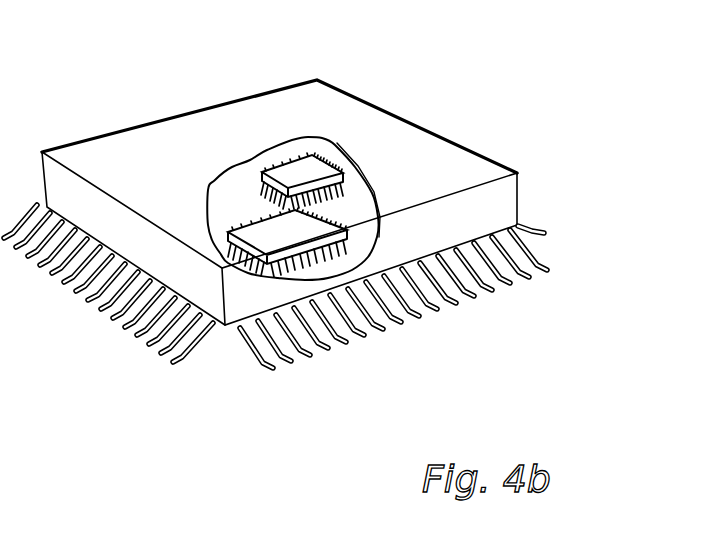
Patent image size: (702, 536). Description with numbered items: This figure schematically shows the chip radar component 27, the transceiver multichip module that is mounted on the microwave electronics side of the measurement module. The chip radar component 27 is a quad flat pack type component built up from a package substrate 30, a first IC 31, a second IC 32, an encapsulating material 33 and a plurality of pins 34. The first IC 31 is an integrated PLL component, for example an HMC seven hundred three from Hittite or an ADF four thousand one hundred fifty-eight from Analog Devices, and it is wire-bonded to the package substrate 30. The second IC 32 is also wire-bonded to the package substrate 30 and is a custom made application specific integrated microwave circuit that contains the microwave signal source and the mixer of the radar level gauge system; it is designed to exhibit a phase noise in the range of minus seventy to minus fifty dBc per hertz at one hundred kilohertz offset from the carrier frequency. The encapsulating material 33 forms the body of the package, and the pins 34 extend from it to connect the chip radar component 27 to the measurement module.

The chip radar component 27 is at (318, 232).
The package substrate 30 is at (358, 203).
The first IC 31 is at (298, 163).
The second IC 32 is at (303, 230).
The encapsulating material 33 is at (167, 207).
The pins 34 is at (199, 352).